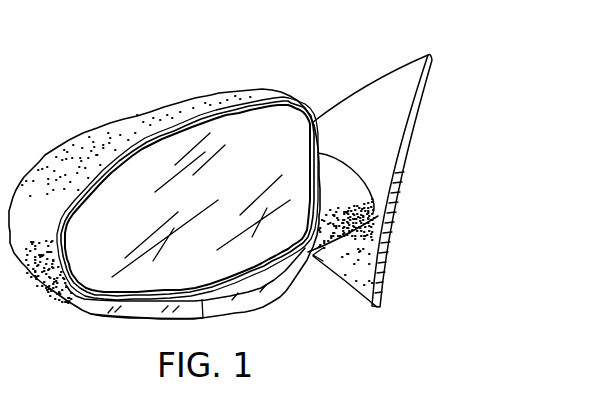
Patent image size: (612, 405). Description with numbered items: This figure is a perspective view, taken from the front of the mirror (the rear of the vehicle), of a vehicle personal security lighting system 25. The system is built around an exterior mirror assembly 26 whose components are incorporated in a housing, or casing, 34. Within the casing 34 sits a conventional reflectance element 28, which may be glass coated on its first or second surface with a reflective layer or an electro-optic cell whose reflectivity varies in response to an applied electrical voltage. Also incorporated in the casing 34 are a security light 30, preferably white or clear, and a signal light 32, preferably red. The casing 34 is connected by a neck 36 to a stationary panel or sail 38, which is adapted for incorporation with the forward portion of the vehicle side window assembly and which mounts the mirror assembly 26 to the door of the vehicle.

The vehicle personal security lighting system 25 is at (249, 63).
The exterior mirror assembly 26 is at (261, 90).
The reflectance element 28 is at (186, 124).
The security light 30 is at (258, 306).
The signal light 32 is at (122, 323).
The housing 34 is at (38, 164).
The neck 36 is at (383, 258).
The sail 38 is at (407, 143).